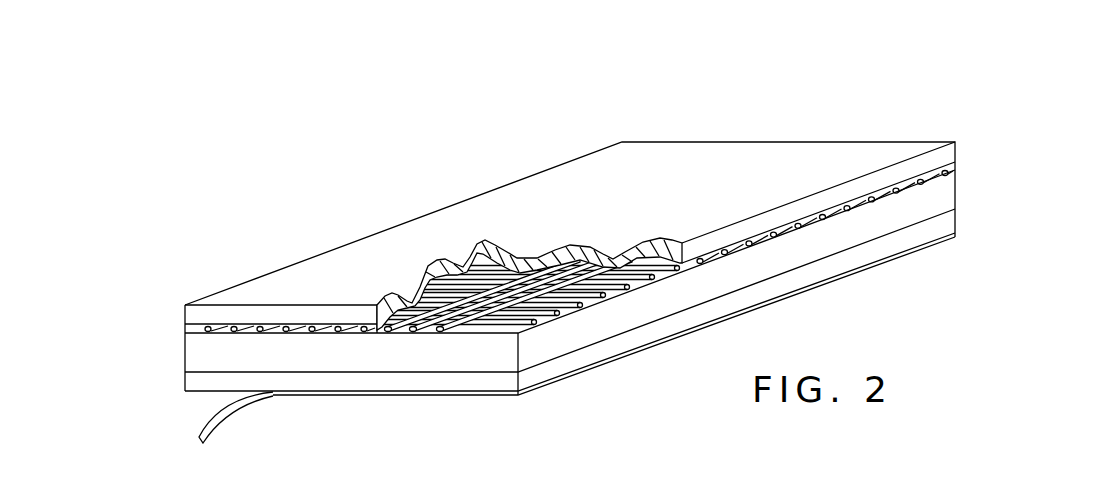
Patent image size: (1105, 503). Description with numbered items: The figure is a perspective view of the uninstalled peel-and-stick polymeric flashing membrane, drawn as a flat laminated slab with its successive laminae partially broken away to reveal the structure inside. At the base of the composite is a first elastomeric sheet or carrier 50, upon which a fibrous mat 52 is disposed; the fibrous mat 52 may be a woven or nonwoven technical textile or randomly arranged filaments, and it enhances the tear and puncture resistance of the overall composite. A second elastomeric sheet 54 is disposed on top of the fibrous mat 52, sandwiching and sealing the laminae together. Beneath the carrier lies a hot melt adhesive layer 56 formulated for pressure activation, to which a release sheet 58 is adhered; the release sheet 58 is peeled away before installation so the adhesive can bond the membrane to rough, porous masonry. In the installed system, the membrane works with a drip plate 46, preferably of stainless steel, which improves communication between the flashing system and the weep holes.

The drip plate 46 is at (781, 143).
The first elastomeric sheet 50 is at (940, 197).
The fibrous mat 52 is at (455, 327).
The second elastomeric sheet 54 is at (197, 313).
The hot melt adhesive layer 56 is at (318, 382).
The release sheet 58 is at (482, 393).